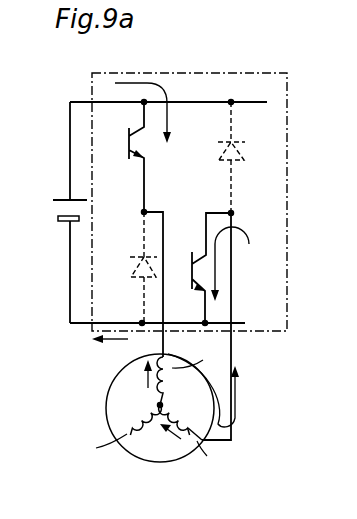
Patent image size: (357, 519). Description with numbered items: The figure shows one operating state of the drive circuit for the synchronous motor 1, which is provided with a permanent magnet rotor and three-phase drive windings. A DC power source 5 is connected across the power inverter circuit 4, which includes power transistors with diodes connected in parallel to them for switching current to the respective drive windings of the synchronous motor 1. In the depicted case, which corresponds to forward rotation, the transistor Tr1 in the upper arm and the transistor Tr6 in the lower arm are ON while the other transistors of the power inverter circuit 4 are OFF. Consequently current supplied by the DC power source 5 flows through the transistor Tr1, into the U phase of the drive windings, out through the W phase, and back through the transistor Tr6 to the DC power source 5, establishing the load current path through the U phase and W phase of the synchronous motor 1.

The synchronous motor 1 is at (107, 418).
The power inverter circuit 4 is at (194, 256).
The DC power source 5 is at (63, 197).
The transistor Tr1 is at (122, 157).
The transistor Tr6 is at (186, 297).